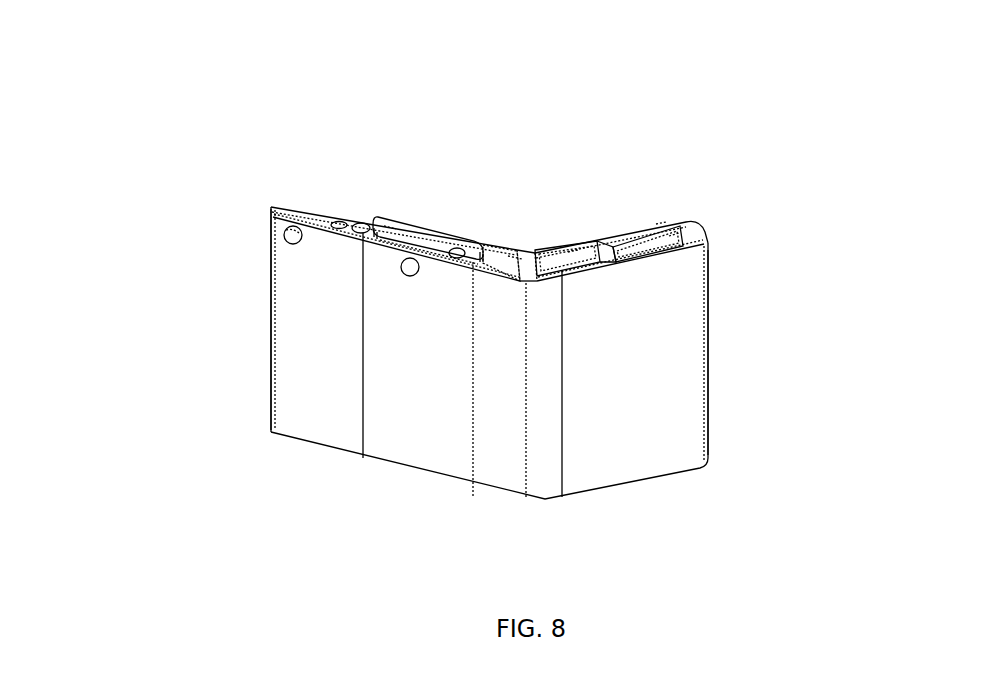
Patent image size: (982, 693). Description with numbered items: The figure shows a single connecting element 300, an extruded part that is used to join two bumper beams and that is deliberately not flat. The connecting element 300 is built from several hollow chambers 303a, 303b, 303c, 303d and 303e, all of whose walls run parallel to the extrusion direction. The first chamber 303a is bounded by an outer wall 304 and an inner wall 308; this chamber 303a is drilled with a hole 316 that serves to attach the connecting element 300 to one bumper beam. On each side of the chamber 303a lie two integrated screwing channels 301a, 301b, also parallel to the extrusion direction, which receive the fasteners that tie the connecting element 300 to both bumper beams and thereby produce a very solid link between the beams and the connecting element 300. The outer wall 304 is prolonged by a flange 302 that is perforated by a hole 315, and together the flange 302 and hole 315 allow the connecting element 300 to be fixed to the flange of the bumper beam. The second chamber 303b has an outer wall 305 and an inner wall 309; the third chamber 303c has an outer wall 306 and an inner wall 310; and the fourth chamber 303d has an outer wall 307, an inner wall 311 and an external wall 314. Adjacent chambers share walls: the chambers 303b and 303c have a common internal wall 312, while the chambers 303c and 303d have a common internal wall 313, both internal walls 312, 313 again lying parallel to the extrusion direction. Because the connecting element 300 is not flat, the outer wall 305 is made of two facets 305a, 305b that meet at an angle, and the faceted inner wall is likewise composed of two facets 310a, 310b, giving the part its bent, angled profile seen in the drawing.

The connecting element 300 is at (150, 161).
The integrated screwing channel 301a is at (361, 221).
The integrated screwing channel 301b is at (457, 246).
The flange 302 is at (268, 253).
The hollow chamber 303a is at (390, 223).
The hollow chamber 303b is at (516, 257).
The hollow chamber 303c is at (573, 250).
The hollow chamber 303d is at (674, 234).
The hollow chamber 303e is at (340, 218).
The outer wall 304 is at (382, 351).
The outer wall 305 is at (488, 343).
The facet 305a is at (477, 284).
The facet 305b is at (541, 289).
The outer wall 306 is at (590, 321).
The outer wall 307 is at (671, 317).
The inner wall 308 is at (416, 216).
The inner wall 309 is at (488, 237).
The inner wall 310 is at (565, 236).
The facet 310a is at (547, 240).
The facet 310b is at (583, 236).
The inner wall 311 is at (661, 219).
The common internal wall 312 is at (526, 276).
The common internal wall 313 is at (623, 260).
The external wall 314 is at (712, 297).
The hole 315 is at (289, 232).
The hole 316 is at (401, 268).